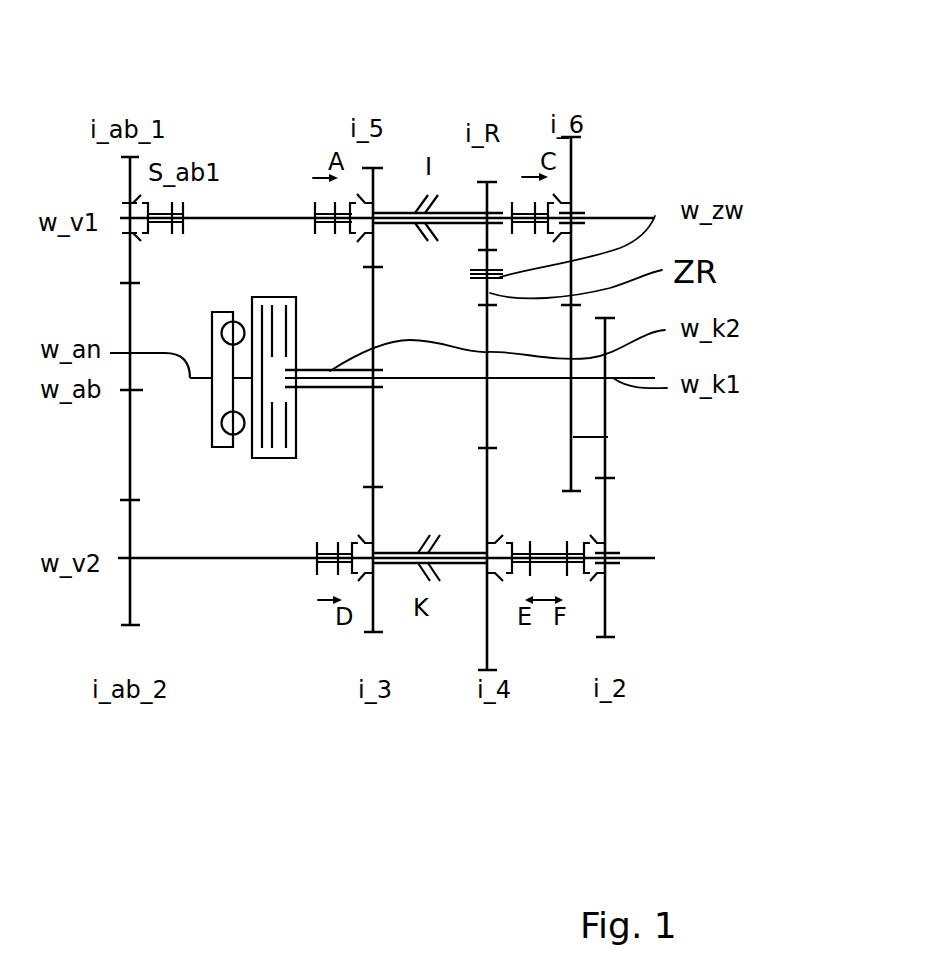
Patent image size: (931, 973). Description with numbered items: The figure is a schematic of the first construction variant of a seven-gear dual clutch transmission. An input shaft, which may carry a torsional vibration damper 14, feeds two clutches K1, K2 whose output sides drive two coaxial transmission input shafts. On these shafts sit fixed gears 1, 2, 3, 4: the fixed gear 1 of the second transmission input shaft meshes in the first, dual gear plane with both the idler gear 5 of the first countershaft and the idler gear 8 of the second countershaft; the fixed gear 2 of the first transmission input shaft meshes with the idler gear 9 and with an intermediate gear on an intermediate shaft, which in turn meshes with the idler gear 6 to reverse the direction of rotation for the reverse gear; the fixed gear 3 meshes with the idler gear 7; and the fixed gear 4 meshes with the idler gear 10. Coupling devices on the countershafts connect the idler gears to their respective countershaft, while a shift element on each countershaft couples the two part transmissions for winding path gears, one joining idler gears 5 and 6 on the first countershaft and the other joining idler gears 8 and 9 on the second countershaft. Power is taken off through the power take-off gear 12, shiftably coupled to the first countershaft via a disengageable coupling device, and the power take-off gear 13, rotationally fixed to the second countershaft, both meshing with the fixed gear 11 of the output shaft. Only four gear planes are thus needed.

The fixed gear 1 is at (372, 435).
The fixed gear 2 is at (485, 336).
The fixed gear 3 is at (608, 437).
The fixed gear 4 is at (607, 455).
The idler gear 5 is at (362, 172).
The idler gear 6 is at (485, 193).
The idler gear 7 is at (572, 185).
The idler gear 8 is at (372, 513).
The idler gear 9 is at (487, 593).
The idler gear 10 is at (607, 600).
The fixed gear of the output shaft 11 is at (132, 308).
The power take-off gear 12 is at (128, 180).
The power take-off gear 13 is at (128, 597).
The torsional vibration damper 14 is at (220, 447).
The first clutch K1 is at (262, 297).
The second clutch K2 is at (288, 297).